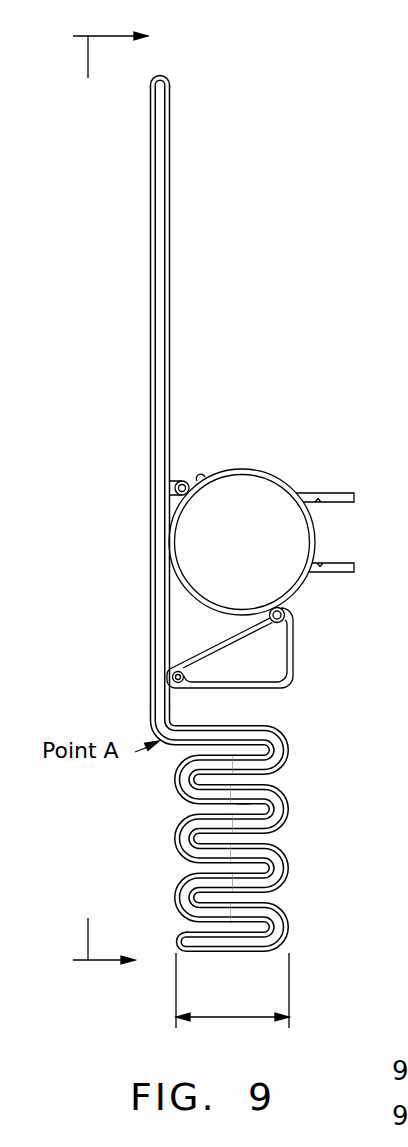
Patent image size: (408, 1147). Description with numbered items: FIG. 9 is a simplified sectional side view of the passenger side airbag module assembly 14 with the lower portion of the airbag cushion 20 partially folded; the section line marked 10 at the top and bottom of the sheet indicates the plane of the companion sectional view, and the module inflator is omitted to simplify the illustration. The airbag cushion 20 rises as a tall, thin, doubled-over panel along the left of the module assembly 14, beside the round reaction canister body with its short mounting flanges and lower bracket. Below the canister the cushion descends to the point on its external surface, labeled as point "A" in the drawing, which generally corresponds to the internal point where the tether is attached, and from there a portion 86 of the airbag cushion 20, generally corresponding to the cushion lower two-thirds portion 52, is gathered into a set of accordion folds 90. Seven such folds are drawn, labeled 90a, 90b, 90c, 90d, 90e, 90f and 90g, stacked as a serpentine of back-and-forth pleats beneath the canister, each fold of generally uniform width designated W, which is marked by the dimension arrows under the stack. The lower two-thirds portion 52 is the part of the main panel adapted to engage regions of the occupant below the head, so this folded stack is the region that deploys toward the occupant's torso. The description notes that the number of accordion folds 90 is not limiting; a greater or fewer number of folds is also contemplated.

The vehicle 10 is at (94, 499).
The airbag module assembly 14 is at (238, 330).
The airbag cushion 20 is at (150, 268).
The lower two-thirds portion 52 is at (214, 823).
The portion of the airbag cushion 86 is at (285, 793).
The accordion folds 90 is at (211, 823).
The accordion fold 90a is at (283, 748).
The accordion fold 90b is at (174, 786).
The accordion fold 90c is at (285, 824).
The accordion fold 90d is at (174, 838).
The accordion fold 90e is at (287, 880).
The accordion fold 90f is at (174, 890).
The accordion fold 90g is at (288, 936).
The width W is at (234, 1012).